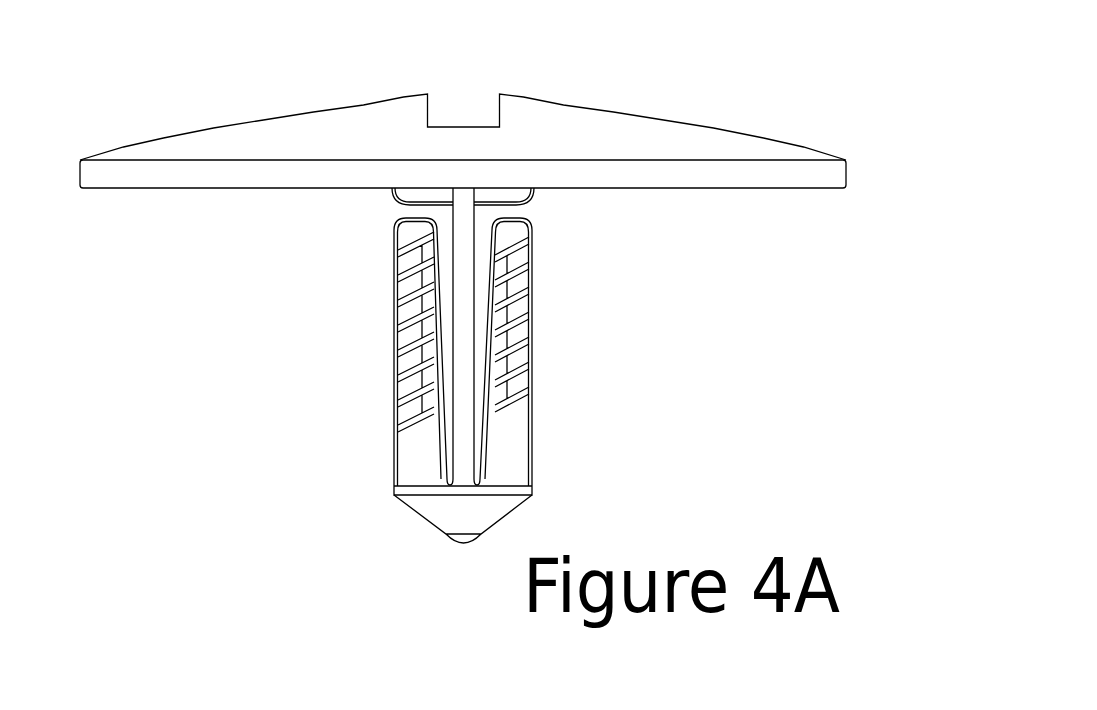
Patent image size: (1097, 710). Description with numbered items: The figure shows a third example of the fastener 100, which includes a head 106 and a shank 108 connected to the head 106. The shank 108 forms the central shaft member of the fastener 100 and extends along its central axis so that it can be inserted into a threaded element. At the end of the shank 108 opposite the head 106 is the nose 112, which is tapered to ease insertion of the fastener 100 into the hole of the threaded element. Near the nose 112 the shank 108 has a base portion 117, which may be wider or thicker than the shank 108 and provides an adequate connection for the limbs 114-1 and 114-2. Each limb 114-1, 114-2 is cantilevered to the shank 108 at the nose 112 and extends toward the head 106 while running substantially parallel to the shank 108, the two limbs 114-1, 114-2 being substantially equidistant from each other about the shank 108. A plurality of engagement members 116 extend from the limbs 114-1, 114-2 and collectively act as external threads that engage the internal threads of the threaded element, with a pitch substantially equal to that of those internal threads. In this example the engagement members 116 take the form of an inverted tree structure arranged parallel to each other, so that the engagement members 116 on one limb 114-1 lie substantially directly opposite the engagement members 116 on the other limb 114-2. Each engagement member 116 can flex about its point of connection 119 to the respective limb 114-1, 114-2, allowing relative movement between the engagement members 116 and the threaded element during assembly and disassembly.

The fastener 100 is at (463, 307).
The head 106 is at (463, 117).
The shank 108 is at (346, 336).
The nose 112 is at (417, 555).
The limb 114-1 is at (420, 449).
The limb 114-2 is at (512, 449).
The engagement members 116 is at (460, 311).
The base portion 117 is at (376, 505).
The point of connection 119 is at (412, 388).